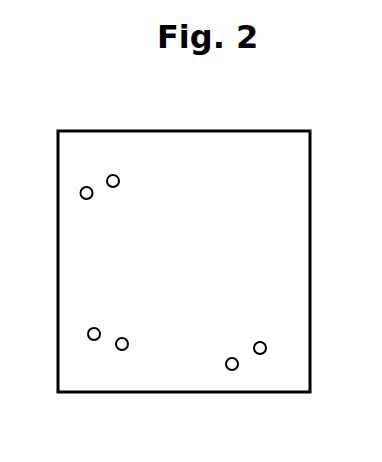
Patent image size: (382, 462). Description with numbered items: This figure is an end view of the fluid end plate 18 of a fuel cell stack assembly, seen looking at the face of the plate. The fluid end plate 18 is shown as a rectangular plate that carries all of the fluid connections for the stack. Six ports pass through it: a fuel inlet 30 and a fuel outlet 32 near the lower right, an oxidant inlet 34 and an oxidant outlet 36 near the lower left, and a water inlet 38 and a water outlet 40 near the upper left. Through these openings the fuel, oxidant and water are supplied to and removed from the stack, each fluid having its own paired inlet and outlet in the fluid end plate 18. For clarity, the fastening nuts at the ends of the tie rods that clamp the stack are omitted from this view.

The fluid end plate 18 is at (245, 157).
The fuel inlet 30 is at (232, 370).
The fuel outlet 32 is at (260, 354).
The oxidant inlet 34 is at (122, 350).
The oxidant outlet 36 is at (94, 340).
The water inlet 38 is at (87, 186).
The water outlet 40 is at (115, 174).